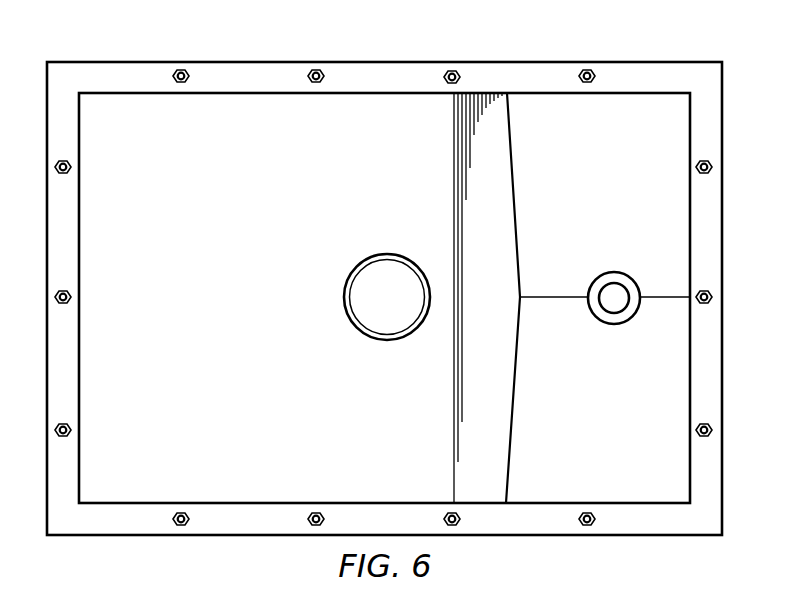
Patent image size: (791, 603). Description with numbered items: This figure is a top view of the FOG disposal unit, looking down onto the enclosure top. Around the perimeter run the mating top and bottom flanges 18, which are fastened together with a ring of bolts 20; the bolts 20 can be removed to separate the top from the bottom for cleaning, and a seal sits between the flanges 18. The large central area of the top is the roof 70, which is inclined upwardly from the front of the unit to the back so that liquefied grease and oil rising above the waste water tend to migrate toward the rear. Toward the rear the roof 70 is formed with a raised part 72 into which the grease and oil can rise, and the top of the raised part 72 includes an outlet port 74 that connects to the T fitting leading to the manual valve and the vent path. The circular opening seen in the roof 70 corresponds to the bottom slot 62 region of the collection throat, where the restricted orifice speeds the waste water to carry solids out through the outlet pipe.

The flanges 18 is at (665, 68).
The bolts 20 is at (458, 72).
The bottom slot 62 is at (387, 341).
The roof 70 is at (197, 313).
The raised part 72 is at (588, 175).
The outlet port 74 is at (618, 272).